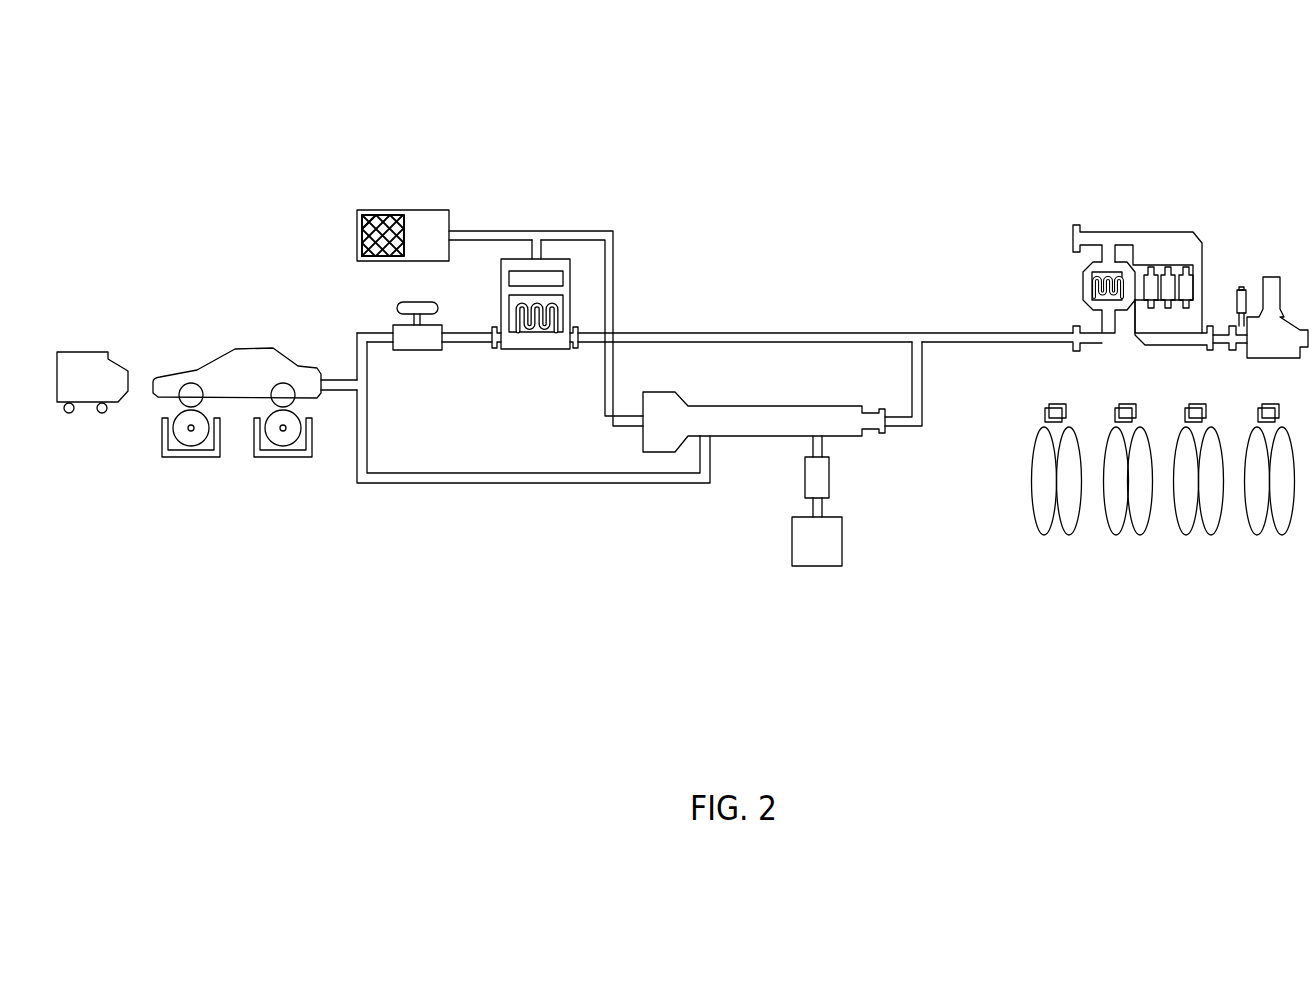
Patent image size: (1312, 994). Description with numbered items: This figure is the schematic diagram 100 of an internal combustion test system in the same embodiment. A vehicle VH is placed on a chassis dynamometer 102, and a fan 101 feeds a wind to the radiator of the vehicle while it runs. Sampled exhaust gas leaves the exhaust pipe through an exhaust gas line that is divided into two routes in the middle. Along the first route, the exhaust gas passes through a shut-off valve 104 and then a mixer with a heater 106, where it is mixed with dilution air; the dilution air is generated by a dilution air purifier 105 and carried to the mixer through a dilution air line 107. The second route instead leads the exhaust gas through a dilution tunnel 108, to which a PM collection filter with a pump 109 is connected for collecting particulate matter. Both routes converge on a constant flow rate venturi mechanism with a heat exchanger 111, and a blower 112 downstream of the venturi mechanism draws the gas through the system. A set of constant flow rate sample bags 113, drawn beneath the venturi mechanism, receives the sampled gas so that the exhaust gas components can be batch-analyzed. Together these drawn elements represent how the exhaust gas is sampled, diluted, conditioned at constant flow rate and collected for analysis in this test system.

The schematic diagram 100 is at (327, 607).
The fan 101 is at (87, 350).
The chassis dynamometer 102 is at (200, 463).
The shut-off valve 104 is at (414, 352).
The dilution air purifier 105 is at (418, 209).
The mixer with a heater 106 is at (535, 350).
The dilution air line 107 is at (511, 229).
The dilution tunnel 108 is at (746, 438).
The PM collection filter with a pump 109 is at (832, 477).
The constant flow rate venturi mechanism with a heat exchanger 111 is at (1148, 230).
The blower 112 is at (1274, 276).
The constant flow rate sample bag 113 is at (1153, 552).
The vehicle VH is at (249, 347).